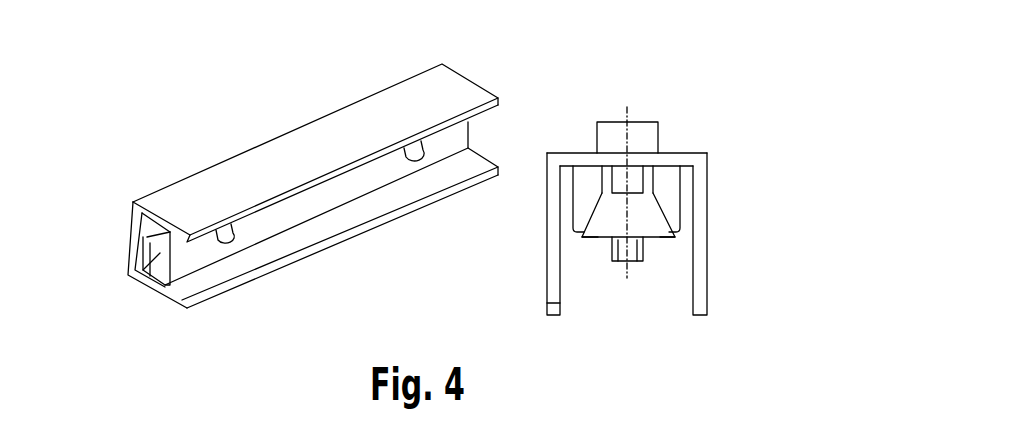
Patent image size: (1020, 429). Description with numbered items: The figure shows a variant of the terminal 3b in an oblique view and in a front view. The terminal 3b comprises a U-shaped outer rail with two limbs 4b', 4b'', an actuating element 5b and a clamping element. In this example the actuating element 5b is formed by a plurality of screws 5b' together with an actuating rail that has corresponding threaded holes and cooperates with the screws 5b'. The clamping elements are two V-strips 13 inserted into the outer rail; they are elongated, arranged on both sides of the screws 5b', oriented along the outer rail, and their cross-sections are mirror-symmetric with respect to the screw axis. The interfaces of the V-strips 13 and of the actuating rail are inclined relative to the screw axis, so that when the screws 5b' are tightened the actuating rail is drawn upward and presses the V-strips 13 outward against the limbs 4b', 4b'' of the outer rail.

The terminal 3b is at (212, 112).
The limb of the outer rail 4b' is at (678, 220).
The limb of the outer rail 4b'' is at (683, 242).
The actuating element 5b is at (733, 204).
The screws 5b' is at (691, 190).
The V-strips 13 is at (652, 238).